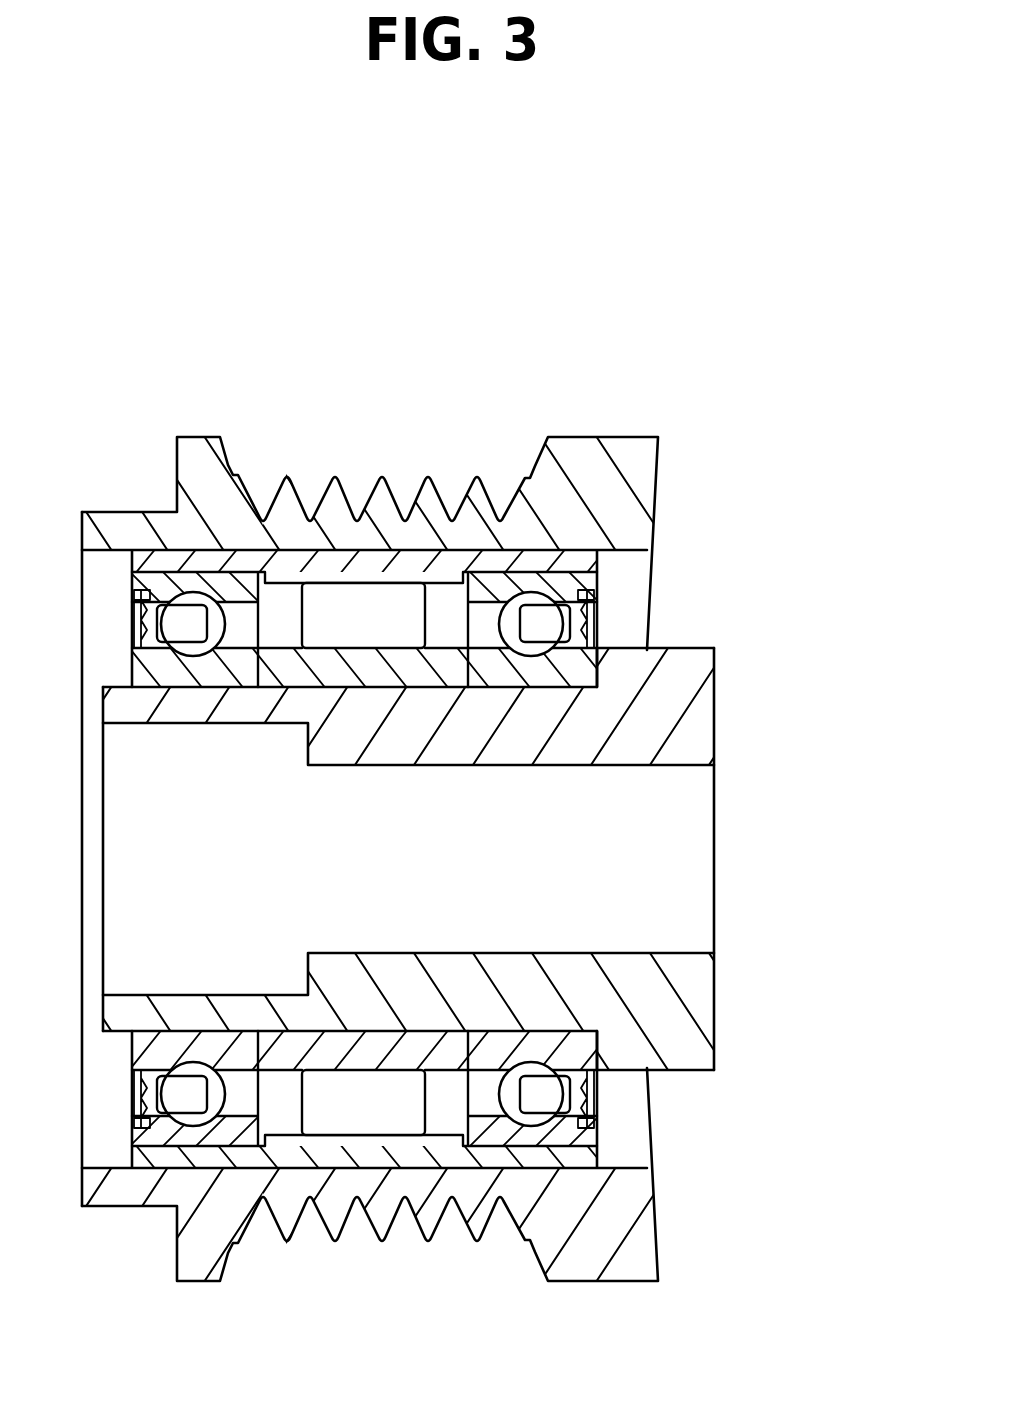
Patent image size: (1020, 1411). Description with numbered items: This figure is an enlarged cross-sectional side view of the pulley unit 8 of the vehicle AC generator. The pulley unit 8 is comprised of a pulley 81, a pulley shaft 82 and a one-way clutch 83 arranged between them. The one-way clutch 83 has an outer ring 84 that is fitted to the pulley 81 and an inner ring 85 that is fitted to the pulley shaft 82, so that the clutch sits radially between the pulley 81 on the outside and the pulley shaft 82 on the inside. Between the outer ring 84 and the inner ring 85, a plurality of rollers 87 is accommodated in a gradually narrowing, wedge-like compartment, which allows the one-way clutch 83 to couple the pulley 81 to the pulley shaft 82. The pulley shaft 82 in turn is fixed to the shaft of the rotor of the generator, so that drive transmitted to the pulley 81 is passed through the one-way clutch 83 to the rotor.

The pulley unit 8 is at (425, 728).
The pulley 81 is at (620, 483).
The pulley shaft 82 is at (683, 673).
The one-way clutch 83 is at (340, 670).
The outer ring 84 is at (297, 563).
The inner ring 85 is at (388, 655).
The rollers 87 is at (362, 610).